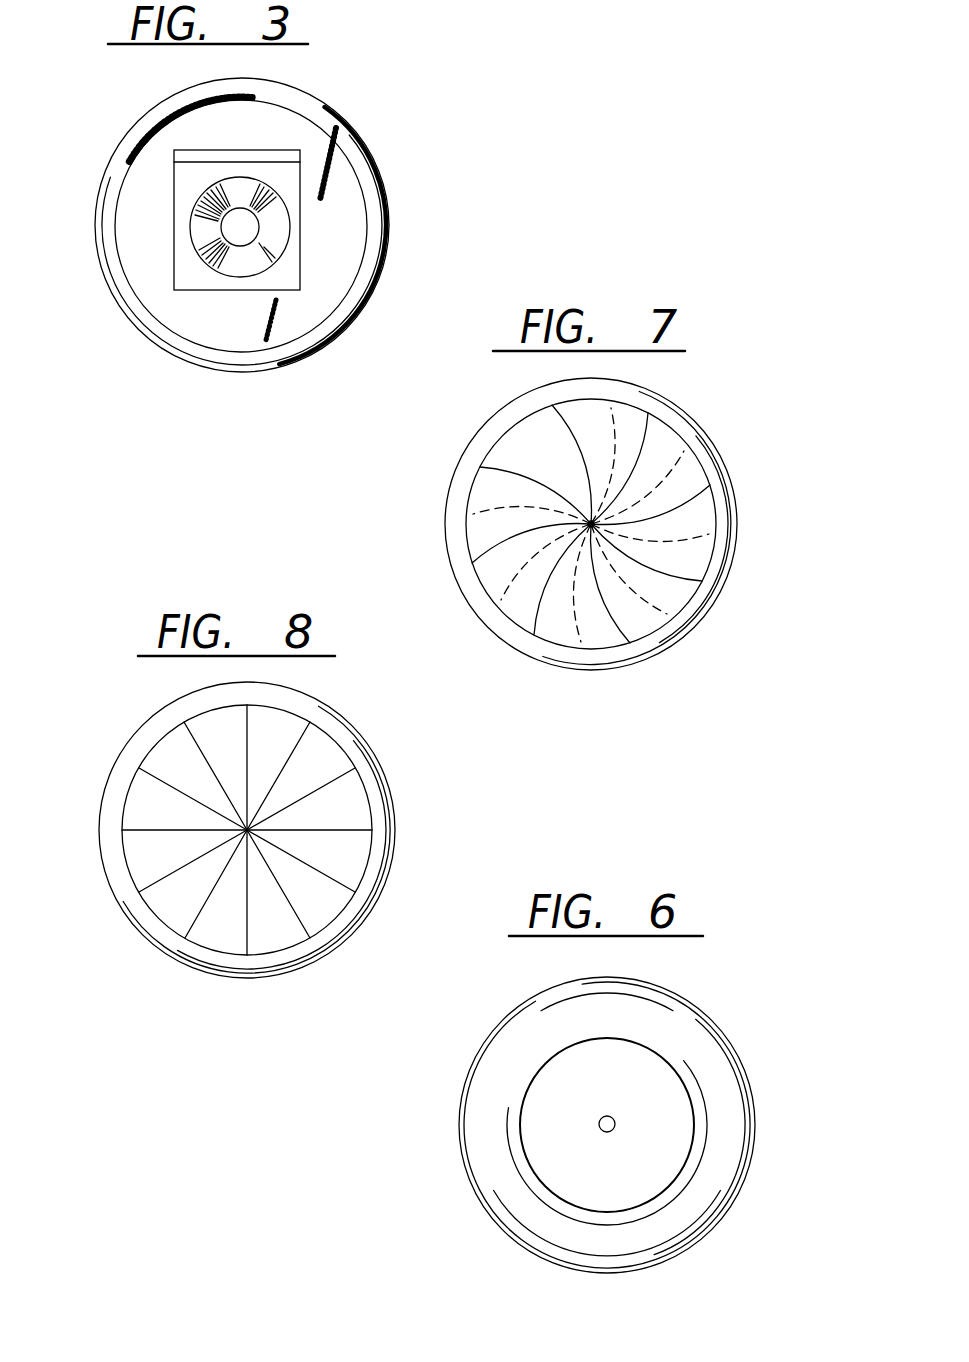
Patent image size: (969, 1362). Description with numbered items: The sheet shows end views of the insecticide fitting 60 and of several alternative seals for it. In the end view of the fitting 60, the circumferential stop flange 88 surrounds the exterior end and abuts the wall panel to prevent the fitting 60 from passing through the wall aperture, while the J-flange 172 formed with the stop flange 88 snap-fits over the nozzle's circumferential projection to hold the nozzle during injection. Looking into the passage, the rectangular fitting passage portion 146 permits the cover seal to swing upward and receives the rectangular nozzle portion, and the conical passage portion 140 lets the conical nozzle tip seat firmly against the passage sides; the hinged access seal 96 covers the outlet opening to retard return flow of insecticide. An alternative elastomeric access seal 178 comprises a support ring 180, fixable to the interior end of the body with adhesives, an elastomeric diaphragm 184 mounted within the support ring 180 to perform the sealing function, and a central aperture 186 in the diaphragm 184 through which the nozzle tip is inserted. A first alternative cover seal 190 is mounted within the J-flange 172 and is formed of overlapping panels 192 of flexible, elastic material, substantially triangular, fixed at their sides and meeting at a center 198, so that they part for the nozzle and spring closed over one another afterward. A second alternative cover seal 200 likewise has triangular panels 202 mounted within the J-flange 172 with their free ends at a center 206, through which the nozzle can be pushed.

In FIG. 3, the fitting 60 is at (321, 86).
In FIG. 3, the circumferential stop flange 88 is at (327, 292).
In FIG. 3, the access seal 96 is at (250, 226).
In FIG. 3, the conical passage portion 140 is at (197, 228).
In FIG. 3, the rectangular fitting passage portion 146 is at (187, 256).
In FIG. 3, the J-flange 172 is at (375, 230).
In FIG. 7, the J-flange 172 is at (728, 503).
In FIG. 8, the J-flange 172 is at (353, 915).
In FIG. 6, the elastomeric access seal 178 is at (751, 1050).
In FIG. 6, the support ring 180 is at (693, 1010).
In FIG. 6, the elastomeric diaphragm 184 is at (667, 1137).
In FIG. 6, the central aperture 186 is at (598, 1124).
In FIG. 7, the cover seal 190 is at (672, 456).
In FIG. 7, the overlapping panels 192 is at (673, 602).
In FIG. 7, the center 198 is at (480, 527).
In FIG. 8, the second alternative cover seal 200 is at (271, 830).
In FIG. 8, the triangular panels 202 is at (350, 857).
In FIG. 8, the center 206 is at (292, 822).